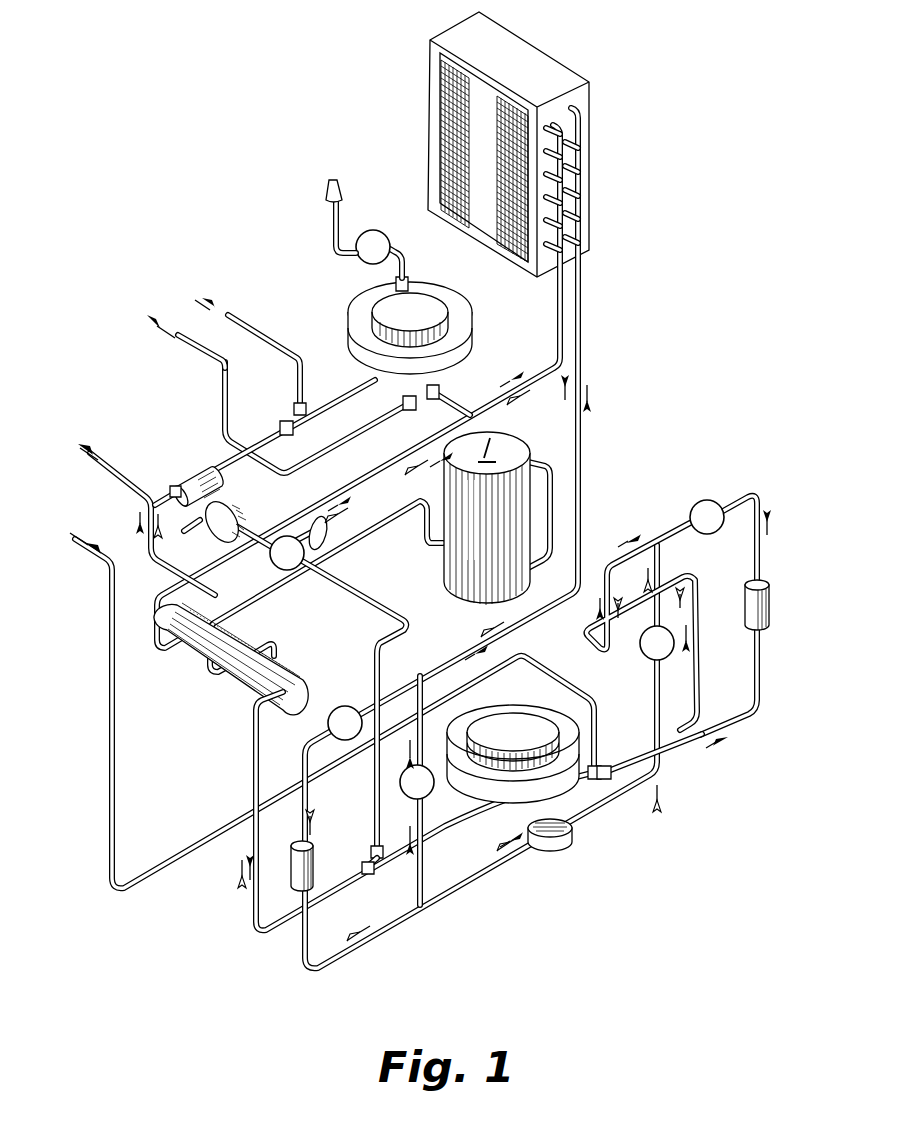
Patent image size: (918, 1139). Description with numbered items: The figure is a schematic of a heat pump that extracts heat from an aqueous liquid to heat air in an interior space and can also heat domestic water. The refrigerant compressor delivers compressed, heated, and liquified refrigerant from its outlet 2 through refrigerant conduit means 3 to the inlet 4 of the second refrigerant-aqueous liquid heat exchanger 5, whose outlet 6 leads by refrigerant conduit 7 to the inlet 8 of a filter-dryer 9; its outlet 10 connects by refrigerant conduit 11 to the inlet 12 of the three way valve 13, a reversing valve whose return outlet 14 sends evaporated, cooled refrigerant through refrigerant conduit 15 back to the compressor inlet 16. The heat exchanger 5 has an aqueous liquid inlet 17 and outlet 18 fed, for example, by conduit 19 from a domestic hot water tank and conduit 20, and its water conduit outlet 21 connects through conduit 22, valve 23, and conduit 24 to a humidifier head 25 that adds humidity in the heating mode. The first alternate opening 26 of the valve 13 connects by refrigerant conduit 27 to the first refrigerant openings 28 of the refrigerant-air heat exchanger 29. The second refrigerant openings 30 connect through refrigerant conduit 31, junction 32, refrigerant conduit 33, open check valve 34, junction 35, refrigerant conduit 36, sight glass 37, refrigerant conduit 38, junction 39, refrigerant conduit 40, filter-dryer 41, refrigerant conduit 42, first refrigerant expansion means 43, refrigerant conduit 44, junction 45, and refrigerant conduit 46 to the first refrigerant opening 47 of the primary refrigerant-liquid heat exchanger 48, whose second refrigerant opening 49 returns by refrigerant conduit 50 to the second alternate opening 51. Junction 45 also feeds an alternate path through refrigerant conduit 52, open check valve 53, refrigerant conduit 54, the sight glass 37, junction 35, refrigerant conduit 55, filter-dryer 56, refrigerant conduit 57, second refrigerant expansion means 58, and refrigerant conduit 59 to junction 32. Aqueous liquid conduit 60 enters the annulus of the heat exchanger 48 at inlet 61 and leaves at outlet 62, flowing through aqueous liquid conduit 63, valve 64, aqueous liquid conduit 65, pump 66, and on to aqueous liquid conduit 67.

The outlet 2 is at (460, 556).
The refrigerant conduit means 3 is at (552, 470).
The inlet 4 is at (440, 390).
The second refrigerant-aqueous liquid heat exchanger 5 is at (468, 302).
The outlet 6 is at (280, 426).
The refrigerant conduit 7 is at (265, 440).
The inlet 8 is at (220, 450).
The filter-dryer 9 is at (200, 470).
The outlet 10 is at (170, 488).
The refrigerant conduit 11 is at (150, 562).
The inlet 12 is at (262, 650).
The three way valve 13 is at (262, 663).
The return outlet 14 is at (228, 668).
The refrigerant conduit 15 is at (425, 523).
The inlet 16 is at (466, 548).
The inlet 17 is at (302, 405).
The outlet 18 is at (405, 412).
The conduit 19 is at (262, 332).
The conduit 20 is at (200, 350).
The outlet 21 is at (408, 282).
The conduit 22 is at (404, 262).
The valve 23 is at (368, 264).
The conduit 24 is at (328, 232).
The humidifier head 25 is at (326, 185).
The first alternate opening 26 is at (183, 647).
The refrigerant conduit 27 is at (556, 342).
The first refrigerant openings 28 is at (548, 128).
The refrigerant-air heat exchanger 29 is at (498, 50).
The second refrigerant openings 30 is at (583, 122).
The refrigerant conduit 31 is at (580, 445).
The junction 32 is at (422, 682).
The refrigerant conduit 33 is at (435, 720).
The open check valve 34 is at (410, 799).
The junction 35 is at (417, 905).
The refrigerant conduit 36 is at (470, 880).
The sight glass 37 is at (565, 845).
The refrigerant conduit 38 is at (605, 807).
The junction 39 is at (657, 772).
The refrigerant conduit 40 is at (757, 695).
The filter-dryer 41 is at (748, 625).
The refrigerant conduit 42 is at (757, 512).
The first refrigerant expansion means 43 is at (712, 500).
The refrigerant conduit 44 is at (676, 530).
The junction 45 is at (655, 540).
The refrigerant conduit 46 is at (699, 600).
The first refrigerant opening 47 is at (608, 764).
The primary refrigerant-liquid heat exchanger 48 is at (495, 712).
The second refrigerant opening 49 is at (367, 875).
The refrigerant conduit 50 is at (244, 880).
The second alternate opening 51 is at (256, 740).
The refrigerant conduit 52 is at (660, 577).
The open check valve 53 is at (662, 660).
The refrigerant conduit 54 is at (700, 728).
The refrigerant conduit 55 is at (330, 966).
The filter-dryer 56 is at (294, 842).
The refrigerant conduit 57 is at (308, 795).
The second refrigerant expansion means 58 is at (343, 706).
The refrigerant conduit 59 is at (400, 683).
The aqueous liquid conduit 60 is at (112, 642).
The inlet 61 is at (597, 764).
The outlet 62 is at (370, 852).
The aqueous liquid conduit 63 is at (395, 612).
The valve 64 is at (272, 563).
The aqueous liquid conduit 65 is at (275, 517).
The pump 66 is at (236, 510).
The aqueous liquid conduit 67 is at (106, 452).